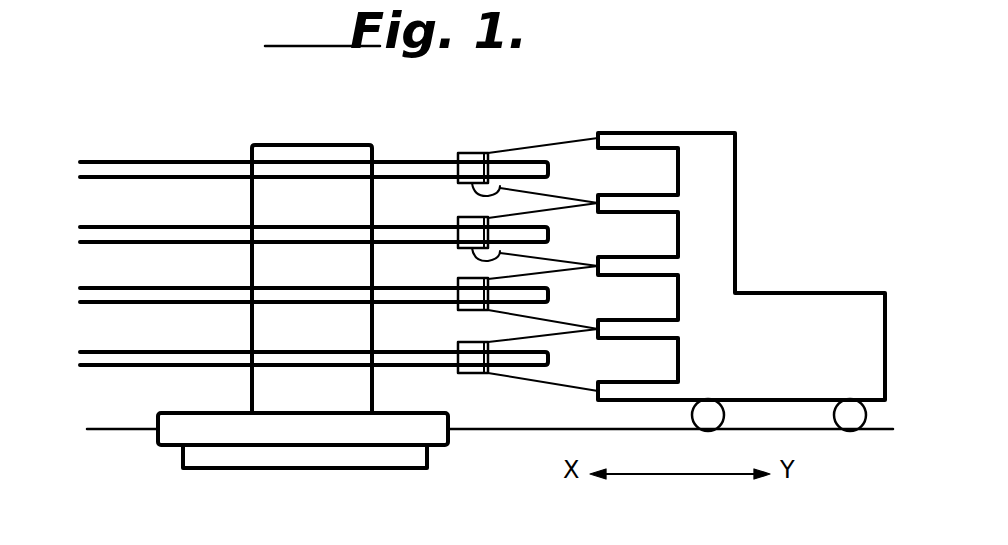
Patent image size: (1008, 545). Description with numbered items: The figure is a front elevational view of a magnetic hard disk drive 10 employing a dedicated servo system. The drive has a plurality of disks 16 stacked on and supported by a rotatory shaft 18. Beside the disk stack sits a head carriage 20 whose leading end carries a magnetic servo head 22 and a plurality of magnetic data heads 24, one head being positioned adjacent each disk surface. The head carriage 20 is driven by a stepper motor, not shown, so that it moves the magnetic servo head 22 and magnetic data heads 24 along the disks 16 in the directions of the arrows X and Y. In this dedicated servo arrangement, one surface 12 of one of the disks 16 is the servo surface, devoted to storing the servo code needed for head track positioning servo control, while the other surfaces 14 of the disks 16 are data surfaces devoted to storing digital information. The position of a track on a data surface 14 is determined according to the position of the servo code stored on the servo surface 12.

The magnetic hard disk drive 10 is at (303, 135).
The servo surface 12 is at (105, 160).
The data surfaces 14 is at (88, 178).
The disks 16 is at (150, 288).
The rotatory shaft 18 is at (357, 147).
The head carriage 20 is at (725, 155).
The magnetic servo head 22 is at (470, 151).
The magnetic data heads 24 is at (495, 250).